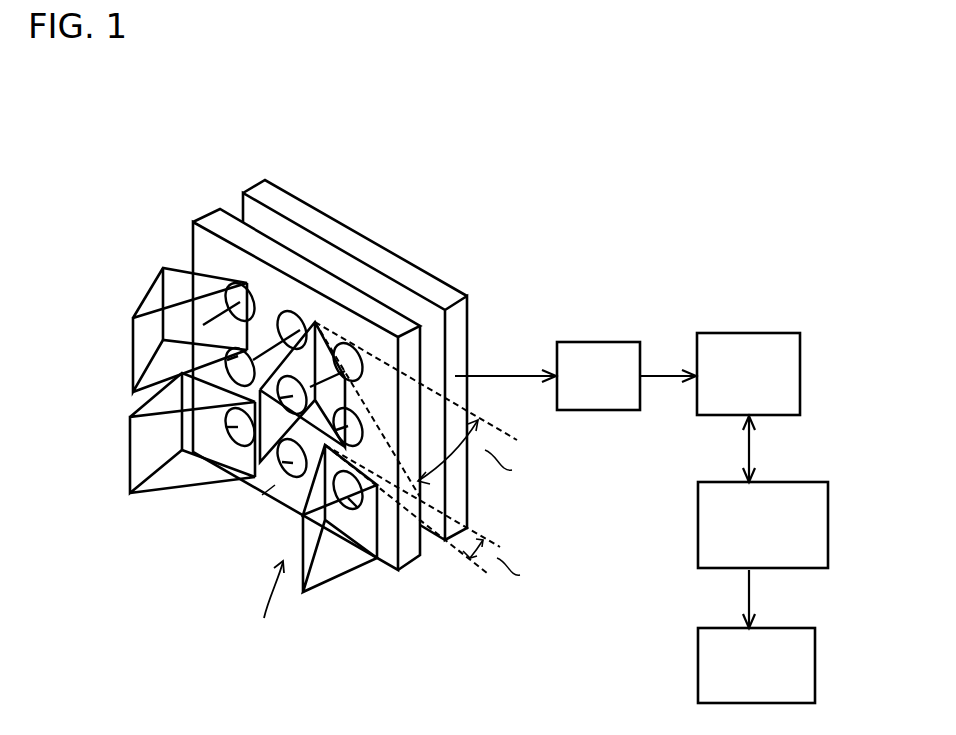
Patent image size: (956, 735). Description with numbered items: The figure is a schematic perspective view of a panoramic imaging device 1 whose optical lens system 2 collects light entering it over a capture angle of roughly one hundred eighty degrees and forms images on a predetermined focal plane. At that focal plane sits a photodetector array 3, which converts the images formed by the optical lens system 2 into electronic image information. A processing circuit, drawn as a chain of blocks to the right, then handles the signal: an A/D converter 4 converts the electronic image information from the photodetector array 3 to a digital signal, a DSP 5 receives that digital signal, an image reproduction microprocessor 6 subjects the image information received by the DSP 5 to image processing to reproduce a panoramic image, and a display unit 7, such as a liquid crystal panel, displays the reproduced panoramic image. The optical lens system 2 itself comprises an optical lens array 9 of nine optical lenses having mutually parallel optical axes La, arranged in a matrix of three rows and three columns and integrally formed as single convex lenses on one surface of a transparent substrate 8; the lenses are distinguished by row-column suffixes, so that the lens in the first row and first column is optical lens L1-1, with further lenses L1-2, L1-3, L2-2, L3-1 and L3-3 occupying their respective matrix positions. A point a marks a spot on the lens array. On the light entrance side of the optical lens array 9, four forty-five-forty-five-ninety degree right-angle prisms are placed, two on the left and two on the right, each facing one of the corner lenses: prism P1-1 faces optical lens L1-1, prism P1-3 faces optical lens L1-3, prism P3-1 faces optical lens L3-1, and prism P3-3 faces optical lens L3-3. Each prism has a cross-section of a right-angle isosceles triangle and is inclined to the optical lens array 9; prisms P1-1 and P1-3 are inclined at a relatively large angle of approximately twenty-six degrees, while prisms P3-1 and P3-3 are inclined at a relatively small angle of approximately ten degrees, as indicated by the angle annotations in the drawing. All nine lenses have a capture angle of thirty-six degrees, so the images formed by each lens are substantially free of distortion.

The panoramic imaging device 1 is at (322, 52).
The optical lens system 2 is at (98, 322).
The photodetector array 3 is at (287, 213).
The A/D converter 4 is at (598, 348).
The DSP 5 is at (746, 345).
The image reproduction microprocessor 6 is at (823, 517).
The display unit 7 is at (803, 678).
The transparent substrate 8 is at (212, 215).
The optical lens array 9 is at (270, 604).
The light spot a is at (232, 283).
The optical axis La is at (268, 500).
The optical lens L1-1 is at (236, 283).
The optical lens L1-2 is at (292, 318).
The optical lens L1-3 is at (352, 352).
The optical lens L2-2 is at (232, 364).
The optical lens L3-1 is at (232, 428).
The optical lens L3-3 is at (395, 520).
The 45-45-90 degree right-angle prism P1-1 is at (146, 300).
The 45-45-90 degree right-angle prism P1-3 is at (343, 333).
The 45-45-90 degree right-angle prism P3-1 is at (158, 482).
The 45-45-90 degree right-angle prism P3-3 is at (342, 563).